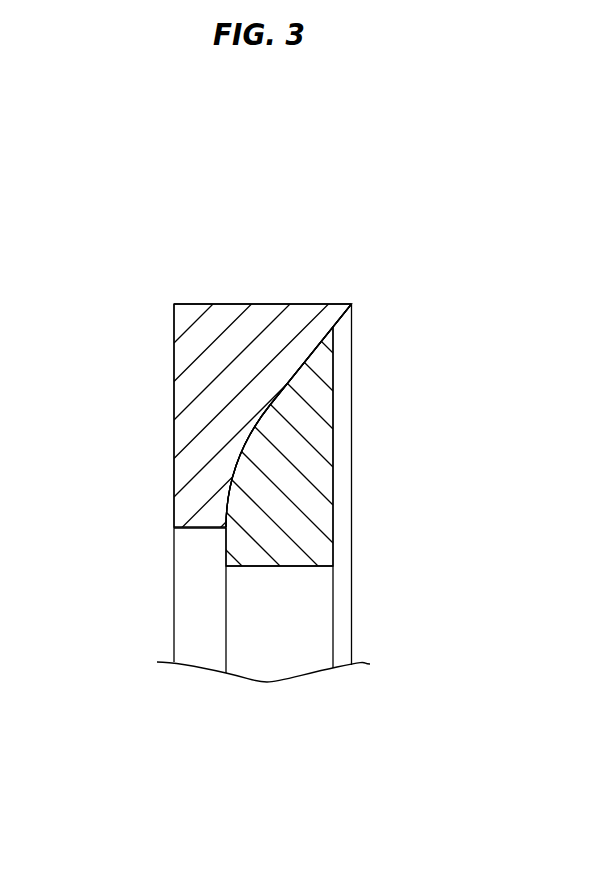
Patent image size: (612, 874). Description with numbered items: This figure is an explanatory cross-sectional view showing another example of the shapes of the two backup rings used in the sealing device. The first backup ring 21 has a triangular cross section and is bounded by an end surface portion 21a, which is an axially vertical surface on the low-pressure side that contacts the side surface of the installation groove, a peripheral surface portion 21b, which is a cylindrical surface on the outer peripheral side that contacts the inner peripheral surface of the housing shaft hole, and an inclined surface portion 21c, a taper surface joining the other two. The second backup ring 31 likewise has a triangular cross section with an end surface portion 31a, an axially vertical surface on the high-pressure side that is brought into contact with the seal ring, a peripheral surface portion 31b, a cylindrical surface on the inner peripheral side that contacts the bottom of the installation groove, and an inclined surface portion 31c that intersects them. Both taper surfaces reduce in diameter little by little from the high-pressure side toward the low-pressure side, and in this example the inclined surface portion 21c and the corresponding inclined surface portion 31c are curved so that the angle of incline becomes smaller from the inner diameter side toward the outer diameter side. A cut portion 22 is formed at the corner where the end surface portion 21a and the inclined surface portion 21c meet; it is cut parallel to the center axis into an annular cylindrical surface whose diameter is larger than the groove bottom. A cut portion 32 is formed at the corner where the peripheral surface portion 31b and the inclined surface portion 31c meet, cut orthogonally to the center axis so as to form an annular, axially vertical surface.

The first backup ring 21 is at (187, 318).
The end surface portion 21a is at (174, 447).
The peripheral surface portion 21b is at (263, 304).
The inclined surface portion 21c is at (258, 440).
The cut portion 22 is at (195, 527).
The second backup ring 31 is at (333, 565).
The end surface portion 31a is at (333, 402).
The peripheral surface portion 31b is at (292, 567).
The inclined surface portion 31c is at (263, 417).
The cut portion 32 is at (225, 556).